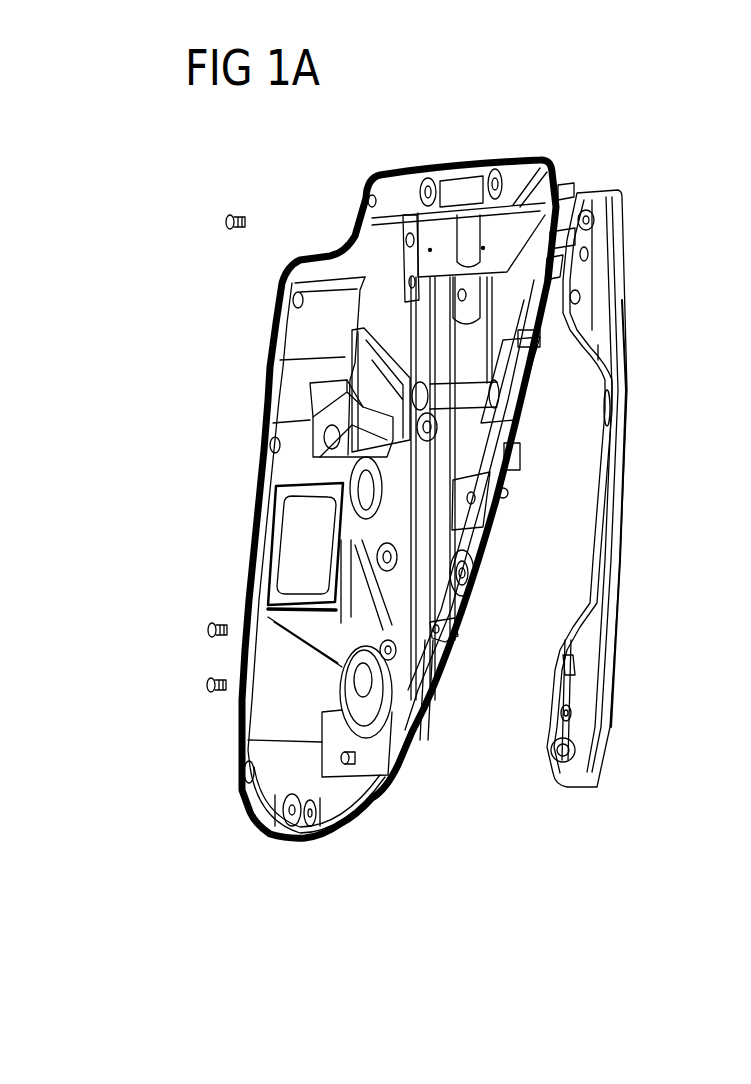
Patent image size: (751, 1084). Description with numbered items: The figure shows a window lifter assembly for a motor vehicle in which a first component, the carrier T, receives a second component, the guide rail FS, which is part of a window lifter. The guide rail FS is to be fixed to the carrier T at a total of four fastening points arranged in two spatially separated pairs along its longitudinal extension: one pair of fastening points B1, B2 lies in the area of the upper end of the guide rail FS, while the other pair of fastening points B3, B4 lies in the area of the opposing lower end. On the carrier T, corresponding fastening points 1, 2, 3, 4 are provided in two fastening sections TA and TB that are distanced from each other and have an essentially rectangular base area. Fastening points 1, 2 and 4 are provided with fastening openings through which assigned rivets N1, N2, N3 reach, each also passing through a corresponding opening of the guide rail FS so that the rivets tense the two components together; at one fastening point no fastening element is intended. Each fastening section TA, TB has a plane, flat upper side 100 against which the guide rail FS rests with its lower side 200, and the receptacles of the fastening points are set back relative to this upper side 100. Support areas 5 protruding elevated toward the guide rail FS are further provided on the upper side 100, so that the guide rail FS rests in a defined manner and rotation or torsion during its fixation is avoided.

The carrier T is at (451, 140).
The fastening section TA is at (396, 194).
The fastening section TB is at (412, 742).
The fastening point 1 is at (362, 185).
The fastening point 2 is at (298, 276).
The fastening point 3 is at (447, 628).
The fastening point 4 is at (417, 720).
The support area 5 is at (410, 290).
The upper side 100 is at (408, 257).
The lower side 200 is at (555, 273).
The rivet N1 is at (235, 213).
The rivet N2 is at (213, 620).
The rivet N3 is at (205, 686).
The guide rail FS is at (645, 255).
The fastening point B1 is at (590, 240).
The fastening point B2 is at (580, 305).
The fastening point B3 is at (567, 667).
The fastening point B4 is at (569, 714).